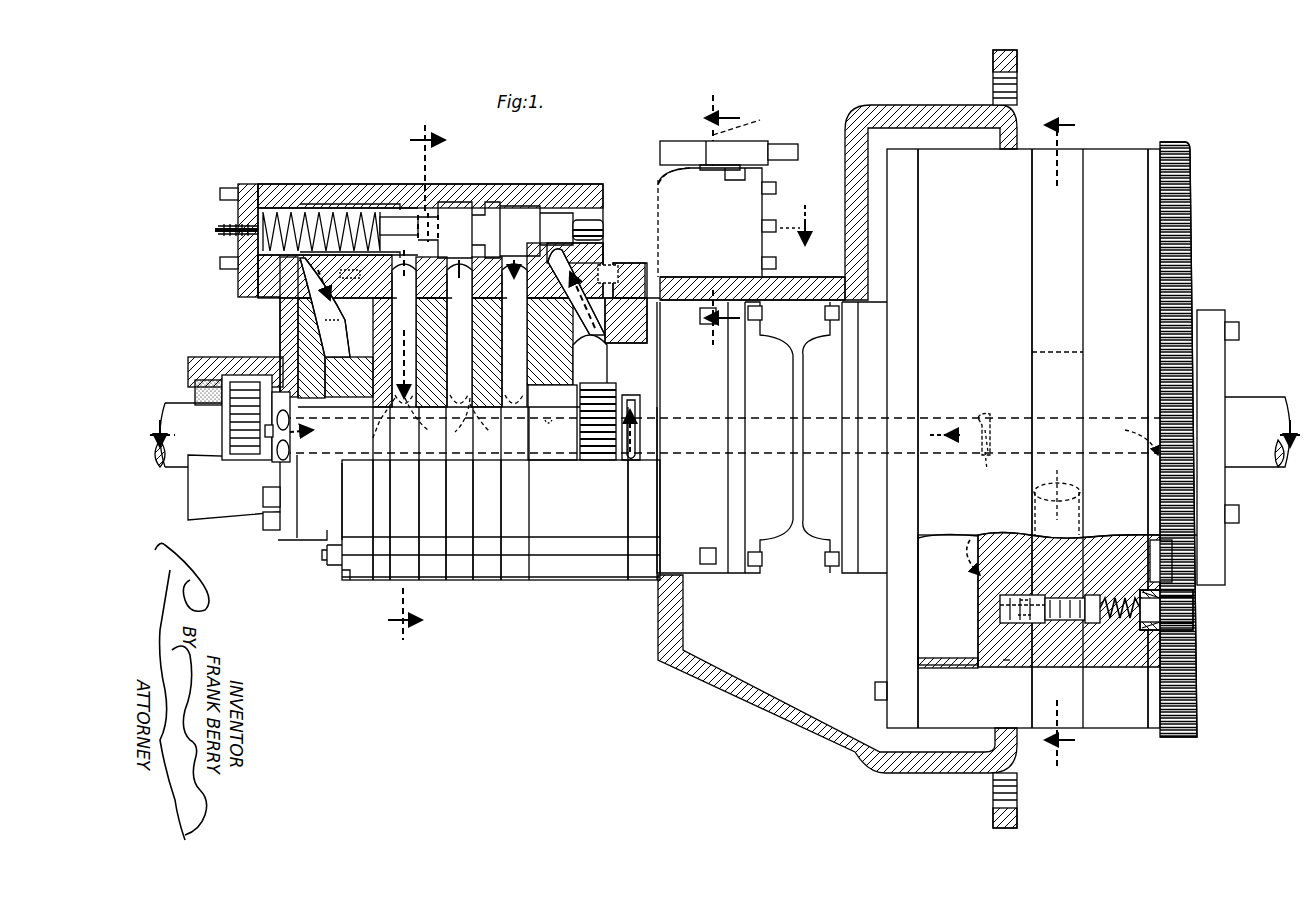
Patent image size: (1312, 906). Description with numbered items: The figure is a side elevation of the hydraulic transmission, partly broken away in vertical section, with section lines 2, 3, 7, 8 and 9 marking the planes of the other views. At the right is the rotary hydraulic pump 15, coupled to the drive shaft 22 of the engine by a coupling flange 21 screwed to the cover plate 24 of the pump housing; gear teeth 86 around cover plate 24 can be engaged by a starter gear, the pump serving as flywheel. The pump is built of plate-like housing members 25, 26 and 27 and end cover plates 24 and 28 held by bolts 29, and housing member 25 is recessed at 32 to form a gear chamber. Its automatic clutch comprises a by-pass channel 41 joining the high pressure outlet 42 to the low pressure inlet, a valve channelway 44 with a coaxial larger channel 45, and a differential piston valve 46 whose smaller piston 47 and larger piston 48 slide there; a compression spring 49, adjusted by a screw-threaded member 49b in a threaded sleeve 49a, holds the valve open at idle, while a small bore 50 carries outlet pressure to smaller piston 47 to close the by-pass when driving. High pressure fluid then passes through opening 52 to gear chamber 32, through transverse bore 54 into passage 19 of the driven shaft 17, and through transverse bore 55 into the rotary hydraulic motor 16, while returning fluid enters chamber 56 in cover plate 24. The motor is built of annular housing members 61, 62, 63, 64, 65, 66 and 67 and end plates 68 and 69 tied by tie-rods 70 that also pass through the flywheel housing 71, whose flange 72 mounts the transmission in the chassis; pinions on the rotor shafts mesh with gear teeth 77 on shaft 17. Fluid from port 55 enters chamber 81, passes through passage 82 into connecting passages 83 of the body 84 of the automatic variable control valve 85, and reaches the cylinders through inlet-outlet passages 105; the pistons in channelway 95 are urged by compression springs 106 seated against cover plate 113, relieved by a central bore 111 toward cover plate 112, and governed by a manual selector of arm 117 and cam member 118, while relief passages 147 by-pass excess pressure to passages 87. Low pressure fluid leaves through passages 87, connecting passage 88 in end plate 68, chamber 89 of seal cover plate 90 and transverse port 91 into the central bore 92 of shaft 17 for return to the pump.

The section line 2- 2 is at (718, 423).
The section line 3- 3 is at (1060, 438).
The section line 7- 7 is at (416, 382).
The section line 8-8 / adjusting screw 8 is at (210, 230).
The section line 9- 9 is at (722, 220).
The rotary hydraulic pump 15 is at (1115, 145).
The rotary hydraulic motor 16 is at (565, 578).
The driven shaft 17 is at (172, 410).
The fluid passage 19 is at (932, 420).
The coupling flange 21 is at (1212, 310).
The drive shaft 22 is at (1252, 410).
The cover plate 24 is at (1190, 548).
The housing member 25 is at (1018, 160).
The housing member 26 is at (1070, 160).
The housing member 27 is at (1132, 162).
The end cover plate 28 is at (895, 605).
The bolts 29 is at (876, 692).
The gear chamber 32 is at (932, 627).
The by-pass channel 41 is at (1068, 640).
The high pressure outlet 42 is at (1057, 499).
The valve channelway 44 is at (1002, 617).
The channel 45 is at (1128, 640).
The differential piston valve 46 is at (1050, 640).
The smaller piston 47 is at (1025, 640).
The larger piston 48 is at (1095, 640).
The compression spring 49 is at (1118, 595).
The threaded sleeve 49a is at (1190, 626).
The screw-threaded member 49b is at (1194, 605).
The small bore 50 is at (1000, 605).
The longitudinal opening 52 is at (1000, 578).
The transverse bore 54 is at (978, 420).
The transverse bore 55 is at (640, 443).
The chamber 56 is at (1175, 572).
The housing member 61 is at (380, 574).
The housing member 62 is at (395, 575).
The housing member 63 is at (432, 575).
The housing member 64 is at (462, 575).
The housing member 65 is at (486, 575).
The housing member 66 is at (514, 575).
The housing member 67 is at (620, 295).
The end plate 68 is at (347, 575).
The end plate 69 is at (648, 320).
The tie-rods 70 is at (327, 556).
The flywheel housing 71 is at (932, 110).
The flange 72 is at (1017, 62).
The gear teeth 77 is at (607, 385).
The chamber 81 is at (660, 358).
The passage 82 is at (584, 330).
The connecting passages 83 is at (563, 263).
The valve body 84 is at (556, 188).
The automatic variable control valve 85 is at (325, 182).
The gear teeth 86 is at (1178, 205).
The passages 87 is at (310, 272).
The connecting passage 88 is at (344, 317).
The chamber 89 is at (255, 378).
The seal cover plate 90 is at (200, 360).
The transverse port 91 is at (290, 452).
The central bore 92 is at (552, 422).
The valve channelway 95 is at (478, 212).
The inlet-outlet passages 105 is at (478, 410).
The compression springs 106 is at (383, 228).
The central bore 111 is at (589, 220).
The cover plate 112 is at (752, 210).
The cover plate 113 is at (256, 184).
The arm 117 is at (790, 152).
The cam member 118 is at (668, 144).
The relief passages 147 is at (424, 232).